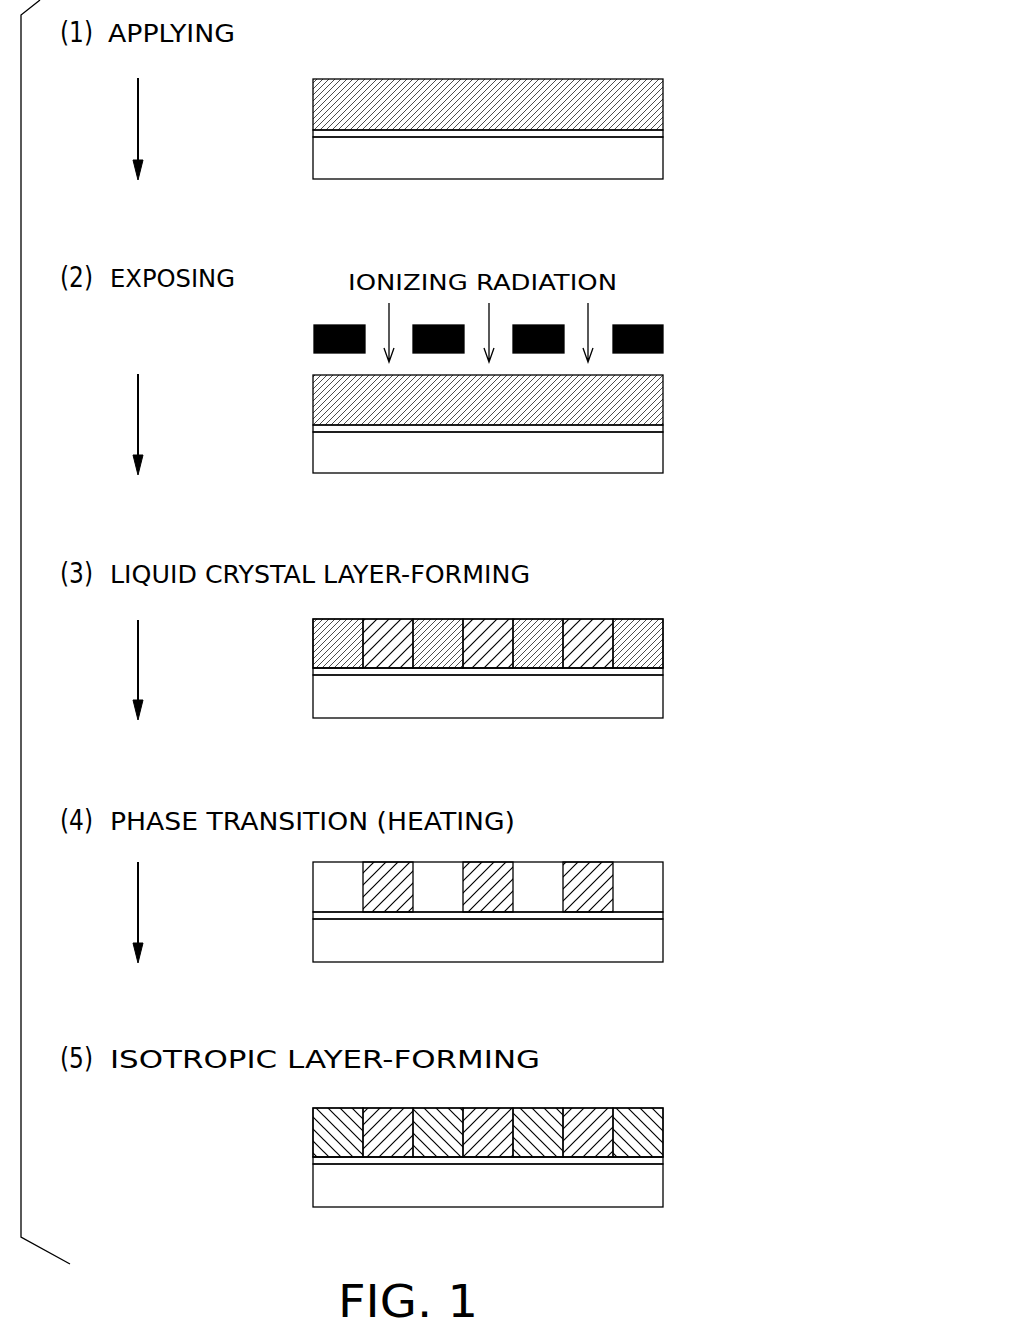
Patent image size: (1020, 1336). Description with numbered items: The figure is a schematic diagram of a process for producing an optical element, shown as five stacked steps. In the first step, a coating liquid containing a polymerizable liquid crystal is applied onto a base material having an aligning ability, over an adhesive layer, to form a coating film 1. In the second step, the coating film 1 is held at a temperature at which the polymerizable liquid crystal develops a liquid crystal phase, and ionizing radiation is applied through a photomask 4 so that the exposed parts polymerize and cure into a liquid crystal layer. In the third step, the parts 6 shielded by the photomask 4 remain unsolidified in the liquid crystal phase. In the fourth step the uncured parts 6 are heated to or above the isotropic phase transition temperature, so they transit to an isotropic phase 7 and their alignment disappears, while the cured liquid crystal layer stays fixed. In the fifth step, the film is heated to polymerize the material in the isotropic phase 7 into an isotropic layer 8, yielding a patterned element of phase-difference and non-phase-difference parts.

The coating film 1 is at (662, 80).
The photomask 4 is at (655, 325).
The uncured parts 6 is at (658, 618).
The isotropic phase 7 is at (658, 862).
The isotropic layer 8 is at (658, 1108).